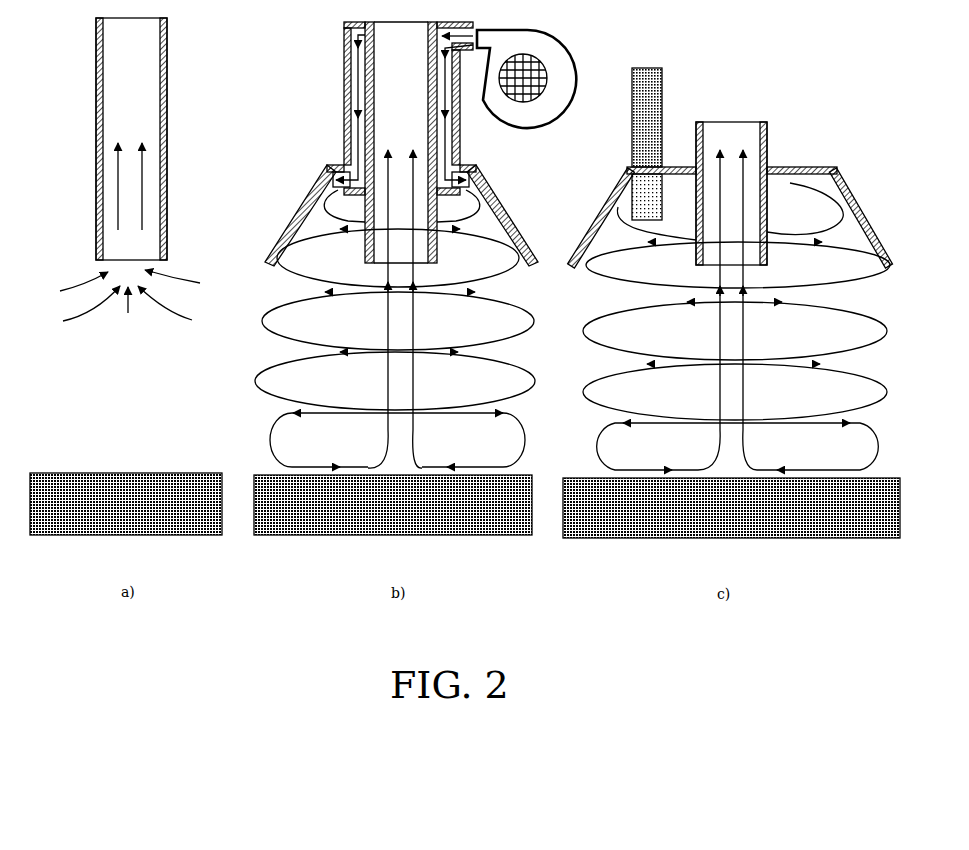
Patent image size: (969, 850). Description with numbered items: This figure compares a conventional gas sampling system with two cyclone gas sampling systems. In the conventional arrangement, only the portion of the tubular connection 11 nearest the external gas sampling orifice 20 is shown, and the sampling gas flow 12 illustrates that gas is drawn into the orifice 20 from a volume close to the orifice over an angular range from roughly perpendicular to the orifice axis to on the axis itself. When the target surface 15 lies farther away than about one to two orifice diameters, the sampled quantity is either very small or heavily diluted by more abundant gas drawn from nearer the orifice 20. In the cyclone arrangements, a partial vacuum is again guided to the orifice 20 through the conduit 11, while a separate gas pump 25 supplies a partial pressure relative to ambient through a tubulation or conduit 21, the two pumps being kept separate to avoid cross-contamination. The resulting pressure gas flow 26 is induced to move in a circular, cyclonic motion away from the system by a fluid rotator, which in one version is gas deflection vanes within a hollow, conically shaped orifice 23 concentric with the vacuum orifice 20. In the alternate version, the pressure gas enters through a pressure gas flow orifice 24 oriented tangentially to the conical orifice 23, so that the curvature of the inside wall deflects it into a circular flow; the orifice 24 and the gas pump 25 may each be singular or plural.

The tubular connection 11 is at (167, 200).
The sampling gas flow 12 is at (118, 312).
The target surface 15 is at (250, 470).
The external gas sampling orifice 20 is at (125, 259).
The tubulation or conduit 21 is at (344, 140).
The hollow conically shaped orifice 23 is at (512, 232).
The pressure gas flow orifice 24 is at (469, 179).
The gas pump 25 is at (632, 124).
The pressure gas flow 26 is at (498, 300).